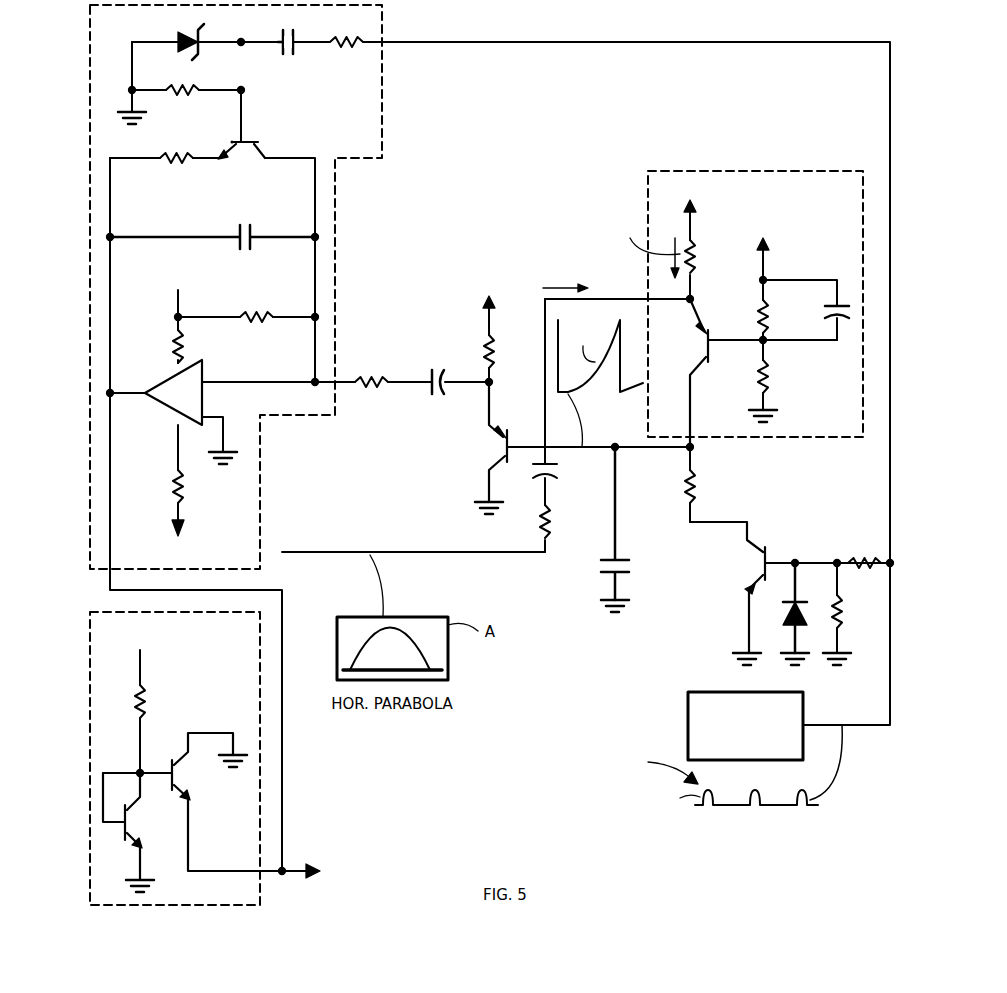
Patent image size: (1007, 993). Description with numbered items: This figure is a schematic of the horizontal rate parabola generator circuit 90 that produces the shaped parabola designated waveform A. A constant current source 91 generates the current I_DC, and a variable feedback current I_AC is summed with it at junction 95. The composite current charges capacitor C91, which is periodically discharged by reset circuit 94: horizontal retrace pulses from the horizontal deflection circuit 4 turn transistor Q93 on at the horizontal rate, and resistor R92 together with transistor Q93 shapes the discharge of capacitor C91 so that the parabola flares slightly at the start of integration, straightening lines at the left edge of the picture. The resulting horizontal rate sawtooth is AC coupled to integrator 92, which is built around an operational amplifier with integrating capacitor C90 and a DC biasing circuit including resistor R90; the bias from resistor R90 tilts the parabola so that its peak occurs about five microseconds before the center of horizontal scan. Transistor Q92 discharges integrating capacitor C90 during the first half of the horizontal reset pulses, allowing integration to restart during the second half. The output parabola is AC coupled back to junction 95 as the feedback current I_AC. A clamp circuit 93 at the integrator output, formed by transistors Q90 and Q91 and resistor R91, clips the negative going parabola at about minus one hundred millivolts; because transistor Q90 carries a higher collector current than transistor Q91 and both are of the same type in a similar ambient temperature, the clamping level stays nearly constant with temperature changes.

The horizontal deflection circuit 4 is at (688, 725).
The circuit 90 is at (398, 494).
The source 91 is at (793, 171).
The integrator 92 is at (335, 205).
The clamp circuit 93 is at (175, 905).
The reset circuit 94 is at (653, 549).
The junction 95 is at (688, 293).
The transistor Q90 is at (227, 802).
The transistor Q91 is at (139, 832).
The transistor Q92 is at (241, 163).
The transistor Q93 is at (790, 593).
The resistor R90 is at (247, 341).
The resistor R91 is at (159, 711).
The resistor R92 is at (711, 484).
The integrating capacitor C90 is at (213, 261).
The capacitor C91 is at (590, 529).